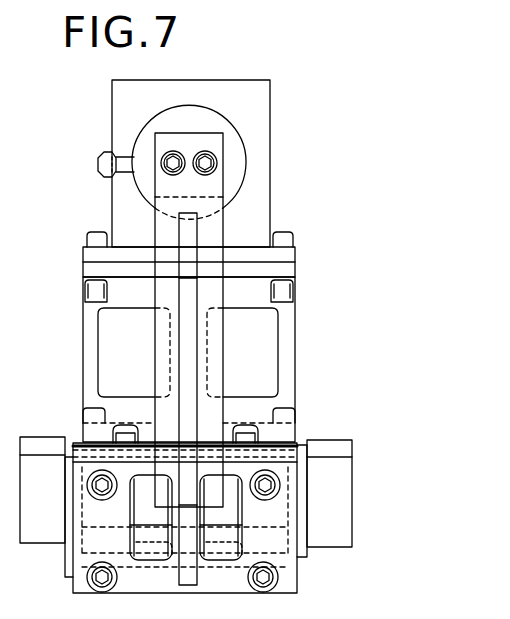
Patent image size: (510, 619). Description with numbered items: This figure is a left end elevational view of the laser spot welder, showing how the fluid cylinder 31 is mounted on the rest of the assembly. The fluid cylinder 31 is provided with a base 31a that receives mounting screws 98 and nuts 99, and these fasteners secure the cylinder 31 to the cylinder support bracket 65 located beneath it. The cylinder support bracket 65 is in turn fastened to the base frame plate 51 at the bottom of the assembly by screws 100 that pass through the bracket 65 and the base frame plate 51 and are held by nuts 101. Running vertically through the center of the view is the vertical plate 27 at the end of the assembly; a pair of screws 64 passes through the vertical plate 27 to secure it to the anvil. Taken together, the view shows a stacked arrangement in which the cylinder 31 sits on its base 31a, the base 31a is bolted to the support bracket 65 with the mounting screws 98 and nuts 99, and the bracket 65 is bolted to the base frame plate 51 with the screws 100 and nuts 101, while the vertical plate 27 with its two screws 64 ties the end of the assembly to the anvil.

The vertical plate 27 is at (176, 362).
The fluid cylinder 31 is at (274, 144).
The base 31a is at (286, 258).
The base frame plate 51 is at (268, 440).
The screws 64 is at (171, 160).
The cylinder support bracket 65 is at (296, 360).
The mounting screws 98 is at (288, 233).
The nuts 99 is at (283, 289).
The screws 100 is at (270, 418).
The nuts 101 is at (290, 478).